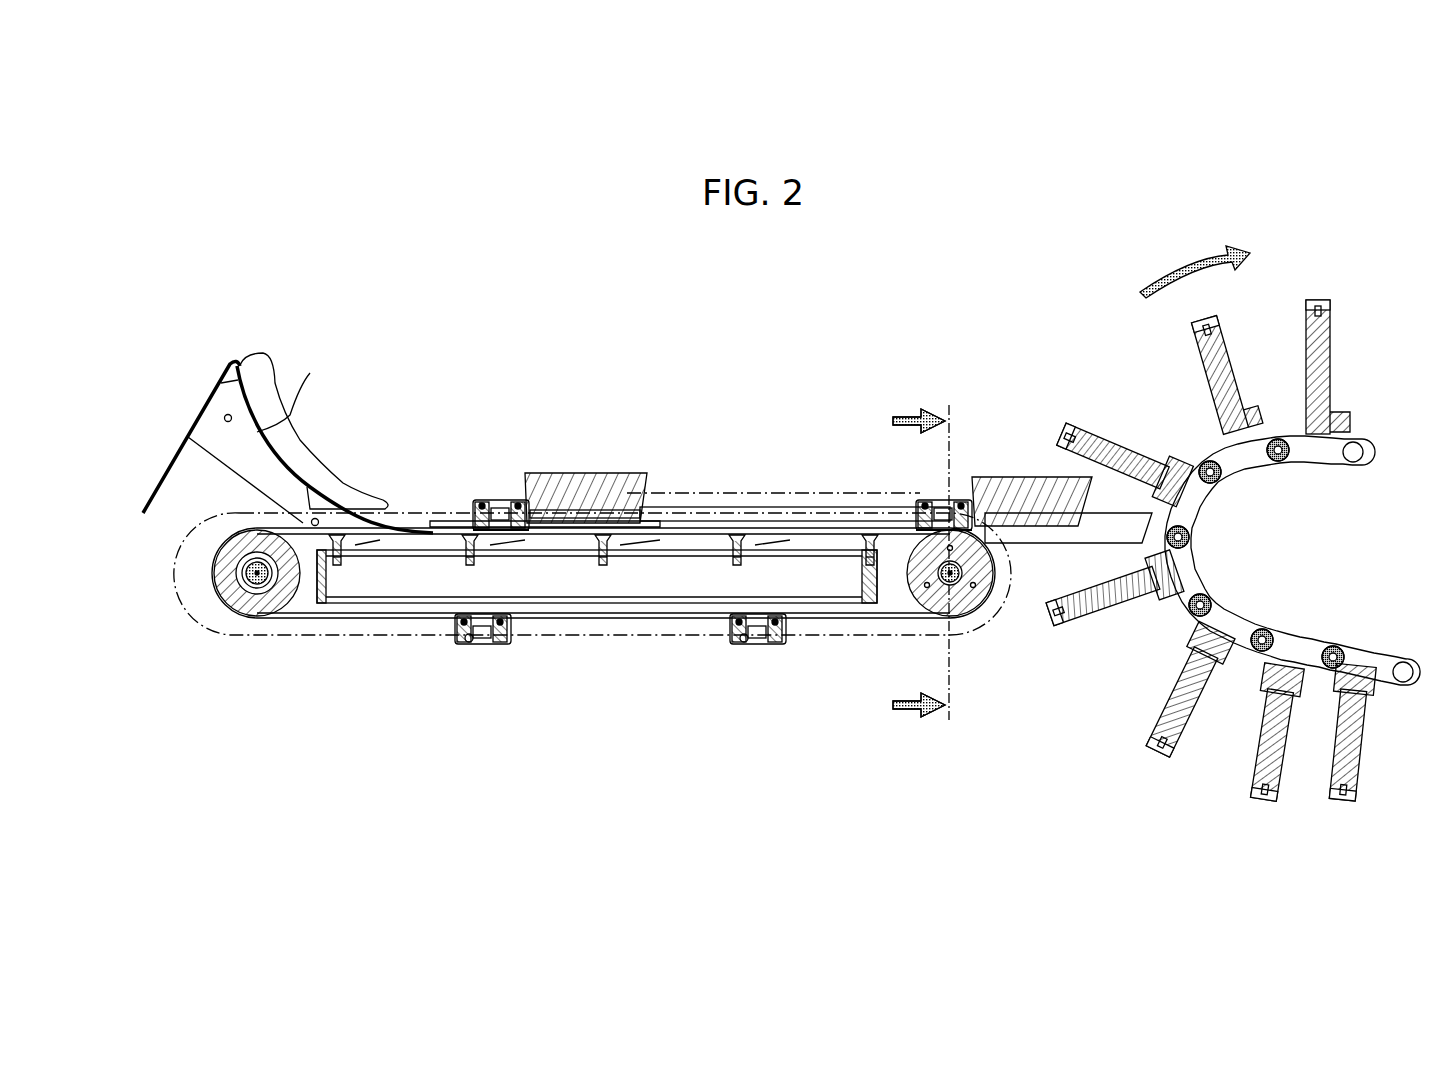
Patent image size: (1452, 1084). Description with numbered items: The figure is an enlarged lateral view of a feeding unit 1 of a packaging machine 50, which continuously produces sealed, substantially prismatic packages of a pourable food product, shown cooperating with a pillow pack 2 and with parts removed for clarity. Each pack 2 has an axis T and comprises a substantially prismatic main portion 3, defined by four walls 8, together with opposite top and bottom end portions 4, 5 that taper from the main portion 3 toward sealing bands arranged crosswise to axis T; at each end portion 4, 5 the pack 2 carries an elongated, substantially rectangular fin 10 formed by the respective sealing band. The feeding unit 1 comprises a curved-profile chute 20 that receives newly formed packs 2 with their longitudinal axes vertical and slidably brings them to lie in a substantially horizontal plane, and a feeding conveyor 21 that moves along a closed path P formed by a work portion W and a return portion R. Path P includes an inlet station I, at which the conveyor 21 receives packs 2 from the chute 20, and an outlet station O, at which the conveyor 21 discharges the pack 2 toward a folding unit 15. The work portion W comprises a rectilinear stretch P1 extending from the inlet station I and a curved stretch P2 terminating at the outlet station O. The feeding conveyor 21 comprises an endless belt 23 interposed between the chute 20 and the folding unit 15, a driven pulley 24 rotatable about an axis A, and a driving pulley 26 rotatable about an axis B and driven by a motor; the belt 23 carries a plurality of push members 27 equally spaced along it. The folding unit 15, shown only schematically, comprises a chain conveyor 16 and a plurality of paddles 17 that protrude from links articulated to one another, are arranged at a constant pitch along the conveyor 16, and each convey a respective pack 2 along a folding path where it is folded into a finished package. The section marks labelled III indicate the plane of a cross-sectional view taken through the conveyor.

The feeding unit 1 is at (455, 362).
The pack 2 is at (575, 475).
The main portion 3 is at (613, 466).
The top end portion 4 is at (640, 515).
The bottom end portion 5 is at (545, 520).
The wall 8 is at (548, 515).
The fin 10 is at (500, 515).
The folding unit 15 is at (1231, 481).
The conveyor 16 is at (1300, 455).
The paddle 17 is at (1230, 362).
The curved-profile chute 20 is at (335, 441).
The feeding conveyor 21 is at (640, 626).
The belt 23 is at (802, 532).
The driven pulley 24 is at (262, 597).
The driving pulley 26 is at (968, 600).
The push member 27 is at (473, 488).
The packaging machine 50 is at (1088, 285).
The axis A is at (250, 573).
The axis B is at (935, 640).
The inlet station I is at (335, 528).
The outlet station O is at (1015, 455).
The closed path P is at (405, 505).
The rectilinear stretch P1 is at (845, 490).
The curved stretch P2 is at (978, 449).
The return portion R is at (545, 638).
The axis T is at (728, 490).
The work portion W is at (397, 508).
The section III is at (921, 568).